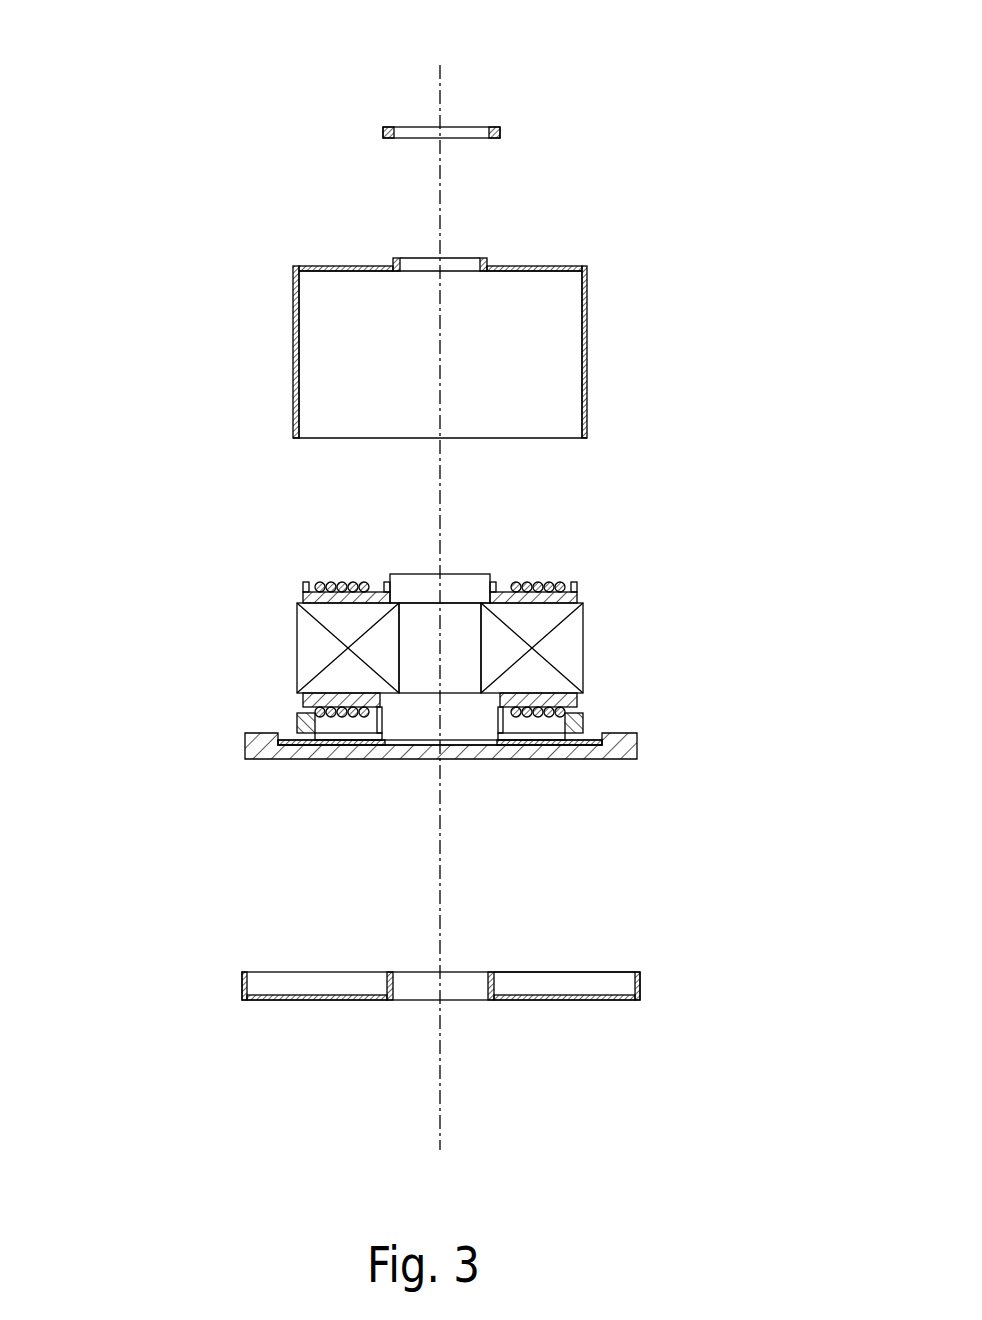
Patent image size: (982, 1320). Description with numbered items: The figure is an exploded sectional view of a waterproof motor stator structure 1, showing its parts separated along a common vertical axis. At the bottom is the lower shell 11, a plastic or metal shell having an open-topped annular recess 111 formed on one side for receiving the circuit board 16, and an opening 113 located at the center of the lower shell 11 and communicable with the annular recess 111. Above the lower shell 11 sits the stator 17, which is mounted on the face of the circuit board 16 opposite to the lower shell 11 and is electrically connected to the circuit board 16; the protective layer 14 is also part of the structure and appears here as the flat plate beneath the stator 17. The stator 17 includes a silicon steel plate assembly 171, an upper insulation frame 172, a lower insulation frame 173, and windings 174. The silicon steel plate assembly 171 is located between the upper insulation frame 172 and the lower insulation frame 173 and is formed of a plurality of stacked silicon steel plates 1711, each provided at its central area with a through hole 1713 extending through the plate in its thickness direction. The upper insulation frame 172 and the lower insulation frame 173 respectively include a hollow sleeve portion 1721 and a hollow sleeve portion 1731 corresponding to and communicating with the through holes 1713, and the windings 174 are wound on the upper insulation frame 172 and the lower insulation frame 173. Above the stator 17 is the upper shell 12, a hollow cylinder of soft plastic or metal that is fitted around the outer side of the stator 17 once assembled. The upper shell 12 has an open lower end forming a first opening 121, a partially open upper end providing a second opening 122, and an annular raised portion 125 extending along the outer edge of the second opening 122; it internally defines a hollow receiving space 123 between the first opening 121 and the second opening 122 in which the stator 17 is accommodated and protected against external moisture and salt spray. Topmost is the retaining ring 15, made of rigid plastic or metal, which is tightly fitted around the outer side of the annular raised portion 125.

The waterproof motor stator structure 1 is at (640, 145).
The lower shell 11 is at (488, 986).
The annular recess 111 is at (610, 980).
The opening 113 is at (423, 988).
The upper shell 12 is at (421, 341).
The first opening 121 is at (326, 435).
The second opening 122 is at (420, 268).
The receiving space 123 is at (322, 386).
The annular raised portion 125 is at (484, 262).
The protective layer 14 is at (623, 752).
The retaining ring 15 is at (392, 128).
The circuit board 16 is at (588, 737).
The stator 17 is at (140, 782).
The silicon steel plate assembly 171 is at (486, 647).
The silicon steel plates 1711 is at (308, 657).
The through hole 1713 is at (476, 648).
The upper insulation frame 172 is at (514, 596).
The hollow sleeve portion 1721 is at (425, 588).
The lower insulation frame 173 is at (379, 758).
The hollow sleeve portion 1731 is at (471, 712).
The windings 174 is at (316, 585).